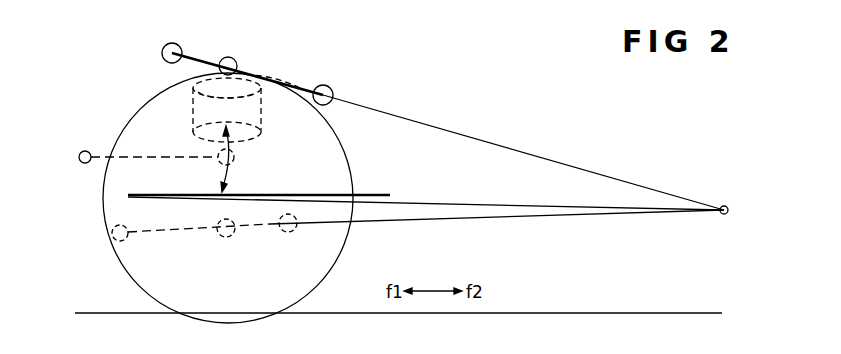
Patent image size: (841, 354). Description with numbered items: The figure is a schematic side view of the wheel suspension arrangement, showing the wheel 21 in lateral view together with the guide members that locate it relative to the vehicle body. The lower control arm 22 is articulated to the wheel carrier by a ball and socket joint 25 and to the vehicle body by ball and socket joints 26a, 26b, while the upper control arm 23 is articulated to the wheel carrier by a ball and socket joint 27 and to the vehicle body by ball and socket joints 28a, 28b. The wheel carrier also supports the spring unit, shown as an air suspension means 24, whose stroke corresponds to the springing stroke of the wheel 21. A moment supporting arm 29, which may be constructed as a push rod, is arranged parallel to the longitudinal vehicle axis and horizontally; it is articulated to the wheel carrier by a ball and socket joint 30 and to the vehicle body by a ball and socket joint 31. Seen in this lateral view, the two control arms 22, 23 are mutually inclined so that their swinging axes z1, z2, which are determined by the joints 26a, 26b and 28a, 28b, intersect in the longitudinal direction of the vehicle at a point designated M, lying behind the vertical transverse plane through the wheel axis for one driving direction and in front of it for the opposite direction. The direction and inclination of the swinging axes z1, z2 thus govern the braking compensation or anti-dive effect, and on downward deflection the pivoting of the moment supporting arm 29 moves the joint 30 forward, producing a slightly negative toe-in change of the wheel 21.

The wheel 21 is at (147, 113).
The lower control arm 22 is at (185, 236).
The upper control arm 23 is at (276, 79).
The air suspension means 24 is at (264, 131).
The ball and socket joint 25 is at (226, 240).
The ball and socket joint 26a is at (288, 241).
The ball and socket joint 26b is at (114, 242).
The ball and socket joint 27 is at (236, 62).
The ball and socket joint 28a is at (333, 95).
The ball and socket joint 28b is at (162, 52).
The moment supporting arm 29 is at (142, 160).
The ball and socket joint 30 is at (235, 161).
The ball and socket joint 31 is at (79, 158).
The swinging axis z1 is at (519, 221).
The swinging axis z2 is at (515, 151).
The intersection point M is at (725, 221).